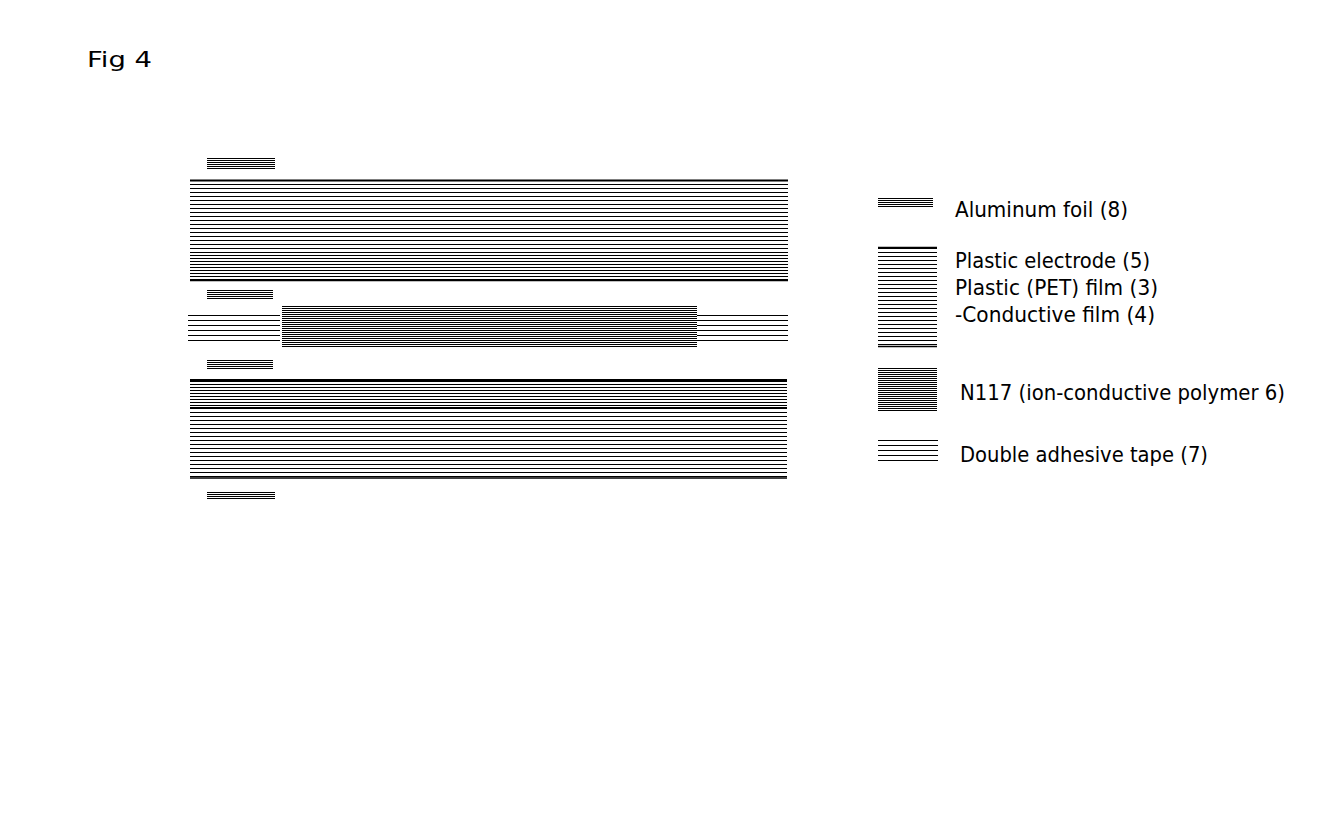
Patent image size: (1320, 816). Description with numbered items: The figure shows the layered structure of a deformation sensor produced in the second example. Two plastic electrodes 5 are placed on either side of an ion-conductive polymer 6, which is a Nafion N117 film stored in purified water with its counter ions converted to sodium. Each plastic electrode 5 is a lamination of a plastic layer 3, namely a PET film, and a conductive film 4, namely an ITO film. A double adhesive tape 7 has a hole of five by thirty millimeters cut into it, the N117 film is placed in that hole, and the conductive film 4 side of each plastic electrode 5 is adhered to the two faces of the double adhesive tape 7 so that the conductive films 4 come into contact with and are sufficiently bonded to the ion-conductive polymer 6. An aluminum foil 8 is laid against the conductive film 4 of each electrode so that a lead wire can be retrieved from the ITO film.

The plastic layer (PET film) 3 is at (190, 212).
The conductive film (ITO film) 4 is at (190, 262).
The plastic electrodes 5 is at (445, 310).
The ion-conductive polymer (N117) 6 is at (697, 347).
The double adhesive tape 7 is at (183, 313).
The aluminum foil 8 is at (225, 153).